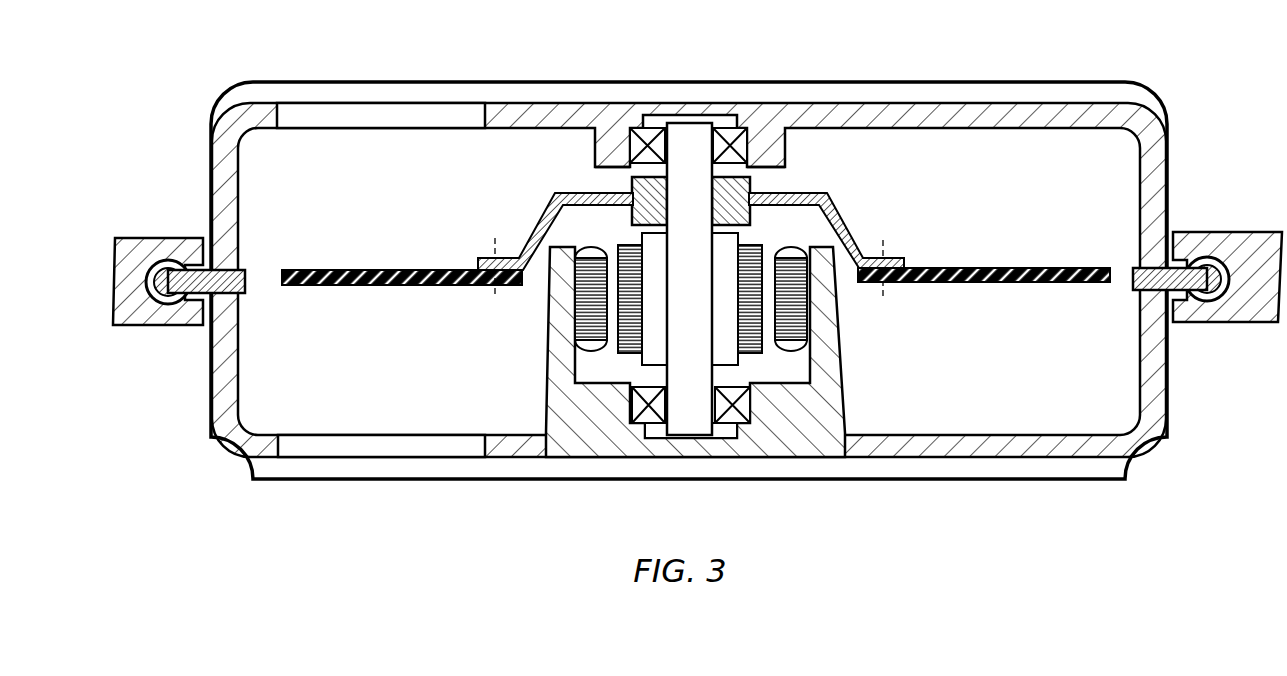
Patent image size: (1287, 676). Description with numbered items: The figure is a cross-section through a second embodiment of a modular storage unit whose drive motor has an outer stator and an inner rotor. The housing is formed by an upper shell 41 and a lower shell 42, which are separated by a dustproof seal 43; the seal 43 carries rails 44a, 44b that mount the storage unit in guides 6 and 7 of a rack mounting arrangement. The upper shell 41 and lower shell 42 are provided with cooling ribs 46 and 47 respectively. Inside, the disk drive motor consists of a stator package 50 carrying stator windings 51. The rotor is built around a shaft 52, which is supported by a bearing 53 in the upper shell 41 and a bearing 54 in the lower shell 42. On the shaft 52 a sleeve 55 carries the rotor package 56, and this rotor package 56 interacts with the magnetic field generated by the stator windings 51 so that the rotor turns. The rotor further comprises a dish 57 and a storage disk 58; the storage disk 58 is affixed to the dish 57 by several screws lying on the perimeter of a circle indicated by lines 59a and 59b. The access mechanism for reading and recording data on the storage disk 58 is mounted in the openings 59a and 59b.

The upper shell 41 is at (212, 140).
The lower shell 42 is at (225, 380).
The dustproof seal 43 is at (262, 238).
The rail 44a is at (165, 262).
The rail 44b is at (1210, 262).
The cooling rib 46 is at (285, 93).
The cooling rib 47 is at (275, 468).
The guide 6 is at (172, 315).
The guide 7 is at (1233, 303).
The stator package 50 is at (592, 349).
The stator windings 51 is at (590, 256).
The shaft 52 is at (700, 246).
The bearing 53 is at (775, 102).
The bearing 54 is at (647, 438).
The sleeve 55 is at (740, 350).
The rotor package 56 is at (765, 256).
The dish 57 is at (846, 236).
The storage disk 58 is at (997, 270).
The line 59a is at (391, 115).
The line 59b is at (381, 446).